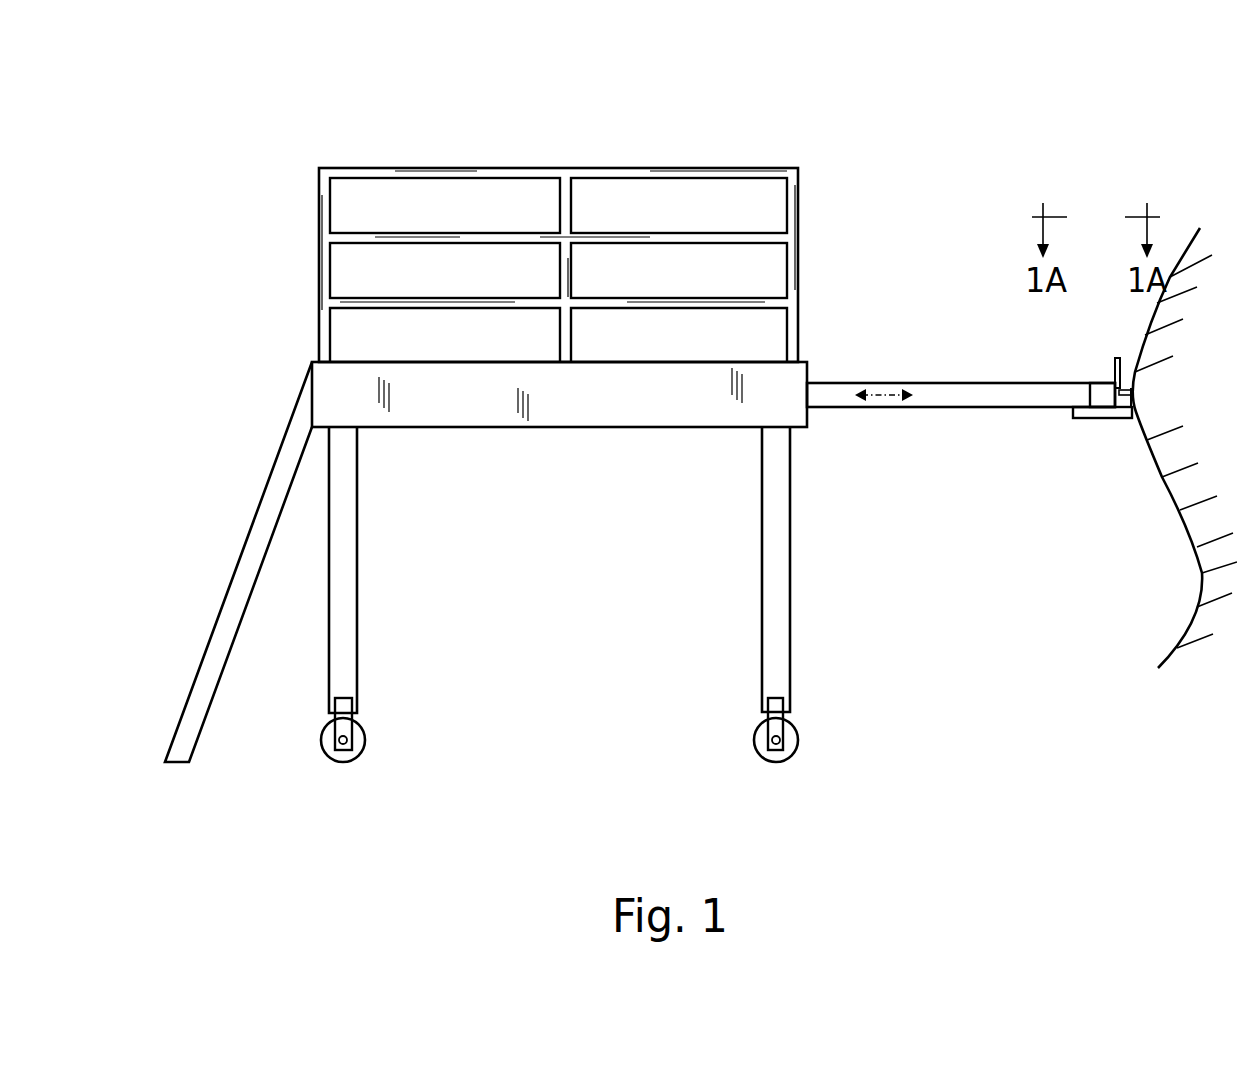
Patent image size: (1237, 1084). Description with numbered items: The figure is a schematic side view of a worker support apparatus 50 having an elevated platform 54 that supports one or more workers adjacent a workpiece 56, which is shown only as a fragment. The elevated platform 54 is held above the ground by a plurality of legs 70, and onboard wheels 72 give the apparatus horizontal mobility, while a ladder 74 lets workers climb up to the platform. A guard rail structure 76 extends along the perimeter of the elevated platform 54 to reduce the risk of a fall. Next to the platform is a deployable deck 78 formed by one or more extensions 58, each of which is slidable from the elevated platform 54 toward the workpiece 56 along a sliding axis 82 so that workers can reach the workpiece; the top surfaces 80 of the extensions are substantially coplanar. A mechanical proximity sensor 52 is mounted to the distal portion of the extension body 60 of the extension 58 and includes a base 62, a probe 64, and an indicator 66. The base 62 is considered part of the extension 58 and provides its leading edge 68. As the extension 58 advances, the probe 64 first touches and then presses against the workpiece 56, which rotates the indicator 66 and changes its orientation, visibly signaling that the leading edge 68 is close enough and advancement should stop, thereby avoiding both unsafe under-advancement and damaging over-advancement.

The worker support apparatus 50 is at (299, 96).
The proximity sensor 52 is at (1100, 453).
The elevated platform 54 is at (495, 361).
The workpiece 56 is at (1168, 500).
The extension 58 is at (909, 370).
The extension body 60 is at (1040, 382).
The base 62 is at (1100, 381).
The probe 64 is at (1097, 419).
The indicator 66 is at (1118, 358).
The leading edge 68 is at (1133, 407).
The legs 70 is at (357, 560).
The wheels 72 is at (321, 740).
The ladder 74 is at (238, 560).
The guard rail structure 76 is at (525, 168).
The deployable deck 78 is at (968, 352).
The top surfaces 80 is at (947, 376).
The sliding axes 82 is at (890, 398).